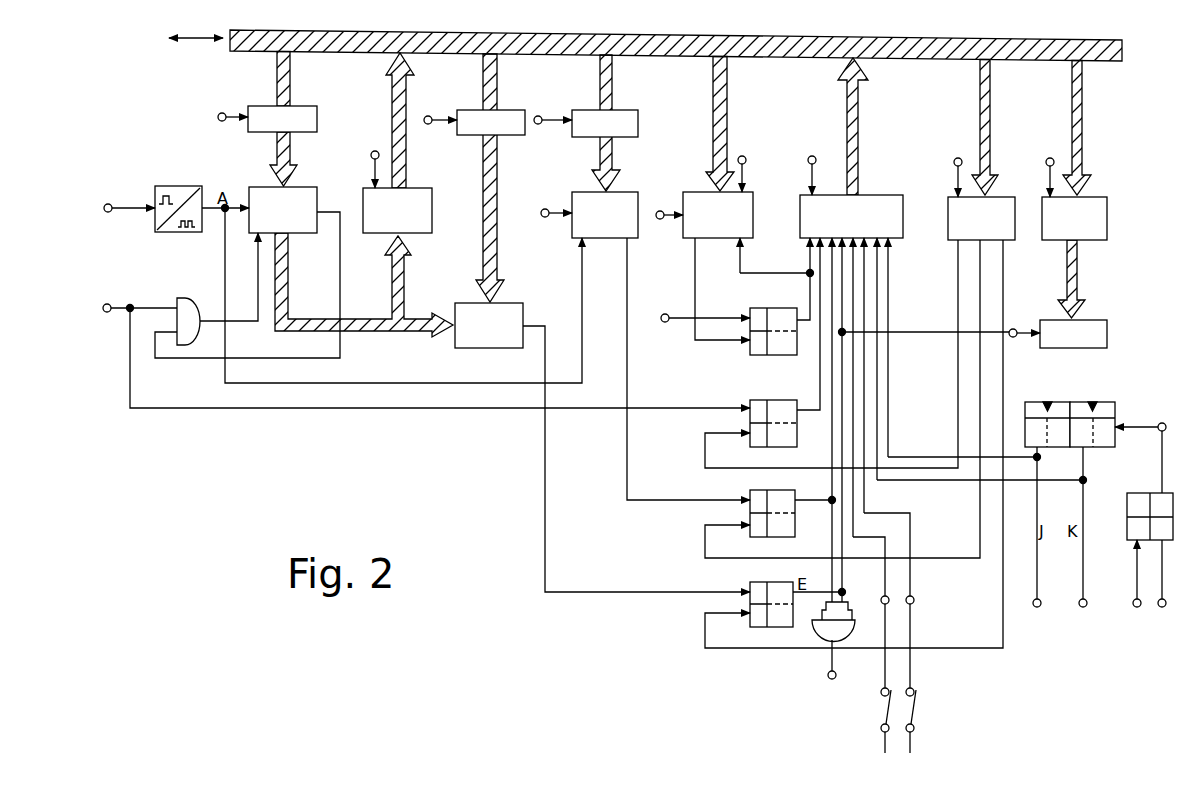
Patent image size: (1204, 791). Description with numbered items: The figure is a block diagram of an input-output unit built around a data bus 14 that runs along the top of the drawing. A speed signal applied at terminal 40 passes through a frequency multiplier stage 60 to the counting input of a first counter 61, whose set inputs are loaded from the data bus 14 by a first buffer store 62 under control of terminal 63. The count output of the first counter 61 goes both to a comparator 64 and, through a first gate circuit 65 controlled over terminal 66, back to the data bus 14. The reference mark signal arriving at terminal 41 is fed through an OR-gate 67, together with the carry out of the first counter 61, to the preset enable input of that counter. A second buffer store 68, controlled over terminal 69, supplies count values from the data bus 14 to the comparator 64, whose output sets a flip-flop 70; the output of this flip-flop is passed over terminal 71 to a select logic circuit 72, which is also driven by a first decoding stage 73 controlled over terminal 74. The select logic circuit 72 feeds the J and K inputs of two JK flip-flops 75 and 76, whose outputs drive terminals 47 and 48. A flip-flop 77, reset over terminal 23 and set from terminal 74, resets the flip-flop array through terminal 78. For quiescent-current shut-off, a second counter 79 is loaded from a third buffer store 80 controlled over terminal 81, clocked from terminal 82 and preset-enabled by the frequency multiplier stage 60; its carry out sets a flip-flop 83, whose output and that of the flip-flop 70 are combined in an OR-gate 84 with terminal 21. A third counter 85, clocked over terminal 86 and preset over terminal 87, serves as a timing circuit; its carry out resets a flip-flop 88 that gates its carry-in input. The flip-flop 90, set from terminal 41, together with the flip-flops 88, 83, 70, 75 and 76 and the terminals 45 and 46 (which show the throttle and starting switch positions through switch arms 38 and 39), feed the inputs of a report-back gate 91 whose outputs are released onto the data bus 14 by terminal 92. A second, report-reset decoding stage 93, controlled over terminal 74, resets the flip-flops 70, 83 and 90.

The data bus 14 is at (660, 46).
The terminal 21 is at (836, 676).
The terminal 23 is at (1161, 607).
The switch arm 38 is at (884, 712).
The switch arm 39 is at (914, 714).
The terminal 40 is at (106, 204).
The terminal 41 is at (106, 304).
The terminal 45 is at (882, 603).
The terminal 46 is at (913, 603).
The terminal 47 is at (1036, 607).
The terminal 48 is at (1082, 607).
The frequency multiplier stage 60 is at (170, 188).
The first counter 61 is at (290, 195).
The first buffer store 62 is at (282, 119).
The terminal 63 is at (222, 113).
The comparator 64 is at (489, 325).
The first gate circuit 65 is at (397, 210).
The terminal 66 is at (374, 151).
The OR-gate 67 is at (184, 302).
The second buffer store 68 is at (491, 122).
The terminal 69 is at (426, 116).
The bistable circuit (flip-flop) 70 is at (775, 588).
The terminal 71 is at (1013, 337).
The select logic circuit 72 is at (1073, 334).
The first decoding stage 73 is at (1074, 218).
The terminal 74 is at (956, 158).
The JK flip-flop 75 is at (1043, 402).
The JK flip-flop 76 is at (1092, 402).
The flip-flop 77 is at (1130, 506).
The terminal 78 is at (1164, 423).
The second counter 79 is at (620, 200).
The third buffer store 80 is at (605, 123).
The terminal 81 is at (536, 116).
The terminal 82 is at (544, 209).
The flip-flop 83 is at (775, 497).
The OR-gate 84 is at (843, 630).
The third counter 85 is at (750, 212).
The terminal 86 is at (666, 188).
The terminal 87 is at (742, 156).
The flip-flop 88 is at (775, 312).
The flip-flop 90 is at (775, 405).
The report-back gate 91 is at (870, 205).
The terminal 92 is at (812, 156).
The second decoding stage 93 is at (981, 218).